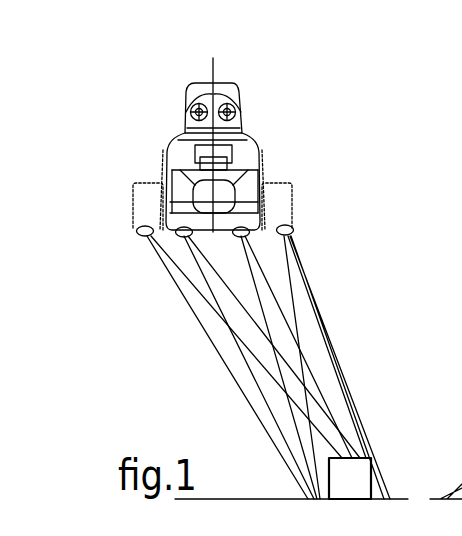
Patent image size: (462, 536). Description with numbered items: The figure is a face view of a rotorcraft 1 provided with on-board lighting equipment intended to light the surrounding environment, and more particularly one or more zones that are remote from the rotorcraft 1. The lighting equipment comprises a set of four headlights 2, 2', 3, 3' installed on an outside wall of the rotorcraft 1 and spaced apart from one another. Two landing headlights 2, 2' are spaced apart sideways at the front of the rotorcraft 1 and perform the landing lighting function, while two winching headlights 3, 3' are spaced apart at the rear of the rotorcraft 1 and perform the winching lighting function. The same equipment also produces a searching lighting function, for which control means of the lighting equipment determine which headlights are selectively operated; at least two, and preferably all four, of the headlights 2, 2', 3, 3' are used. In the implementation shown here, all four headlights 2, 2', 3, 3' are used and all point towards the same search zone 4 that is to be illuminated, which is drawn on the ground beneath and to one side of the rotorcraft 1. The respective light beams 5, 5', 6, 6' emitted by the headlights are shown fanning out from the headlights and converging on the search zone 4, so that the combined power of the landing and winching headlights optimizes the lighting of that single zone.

The rotorcraft 1 is at (293, 136).
The landing headlight 2 is at (284, 246).
The landing headlight 2' is at (146, 260).
The winching headlight 3 is at (310, 209).
The winching headlight 3' is at (122, 217).
The search zone 4 is at (378, 446).
The light beam 5 is at (297, 367).
The light beam 5' is at (251, 367).
The light beam 6 is at (337, 367).
The light beam 6' is at (244, 367).